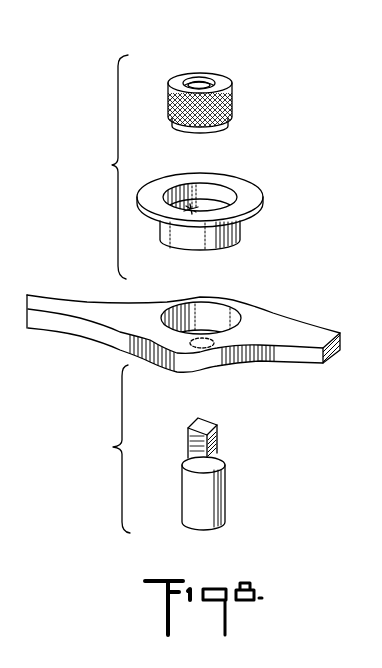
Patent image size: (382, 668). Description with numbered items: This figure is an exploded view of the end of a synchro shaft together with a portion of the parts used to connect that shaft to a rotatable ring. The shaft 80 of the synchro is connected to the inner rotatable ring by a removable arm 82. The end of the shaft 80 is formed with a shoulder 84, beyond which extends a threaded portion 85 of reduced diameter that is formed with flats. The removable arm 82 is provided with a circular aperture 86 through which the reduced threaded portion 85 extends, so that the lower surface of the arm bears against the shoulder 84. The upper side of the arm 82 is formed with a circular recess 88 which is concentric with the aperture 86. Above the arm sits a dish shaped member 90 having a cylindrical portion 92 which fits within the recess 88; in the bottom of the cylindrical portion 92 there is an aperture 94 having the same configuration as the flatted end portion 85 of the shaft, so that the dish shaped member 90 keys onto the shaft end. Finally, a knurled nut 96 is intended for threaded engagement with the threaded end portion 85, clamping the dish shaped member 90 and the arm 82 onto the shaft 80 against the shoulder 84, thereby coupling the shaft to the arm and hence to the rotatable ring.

The shaft 80 is at (207, 471).
The removable arm 82 is at (183, 329).
The shoulder 84 is at (207, 438).
The threaded portion 85 is at (192, 439).
The circular aperture 86 is at (215, 358).
The circular recess 88 is at (234, 316).
The dish shaped member 90 is at (223, 204).
The cylindrical portion 92 is at (200, 240).
The aperture 94 is at (192, 206).
The knurled nut 96 is at (216, 74).